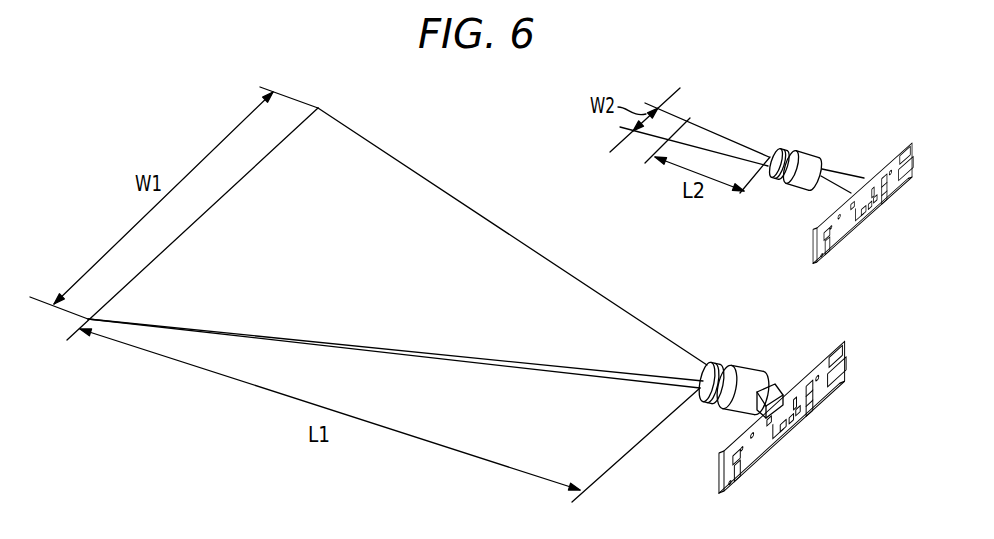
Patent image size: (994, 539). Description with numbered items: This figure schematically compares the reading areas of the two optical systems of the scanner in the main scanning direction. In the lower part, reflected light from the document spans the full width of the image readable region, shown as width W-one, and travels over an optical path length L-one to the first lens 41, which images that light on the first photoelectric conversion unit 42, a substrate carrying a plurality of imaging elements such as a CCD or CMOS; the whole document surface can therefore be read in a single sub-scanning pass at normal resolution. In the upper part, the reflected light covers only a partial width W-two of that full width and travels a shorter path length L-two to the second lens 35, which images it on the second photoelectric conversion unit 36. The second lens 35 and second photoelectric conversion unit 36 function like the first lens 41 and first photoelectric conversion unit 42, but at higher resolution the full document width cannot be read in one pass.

The second lens 35 is at (803, 154).
The second photoelectric conversion unit 36 is at (885, 157).
The first lens 41 is at (747, 366).
The first photoelectric conversion unit 42 is at (813, 360).